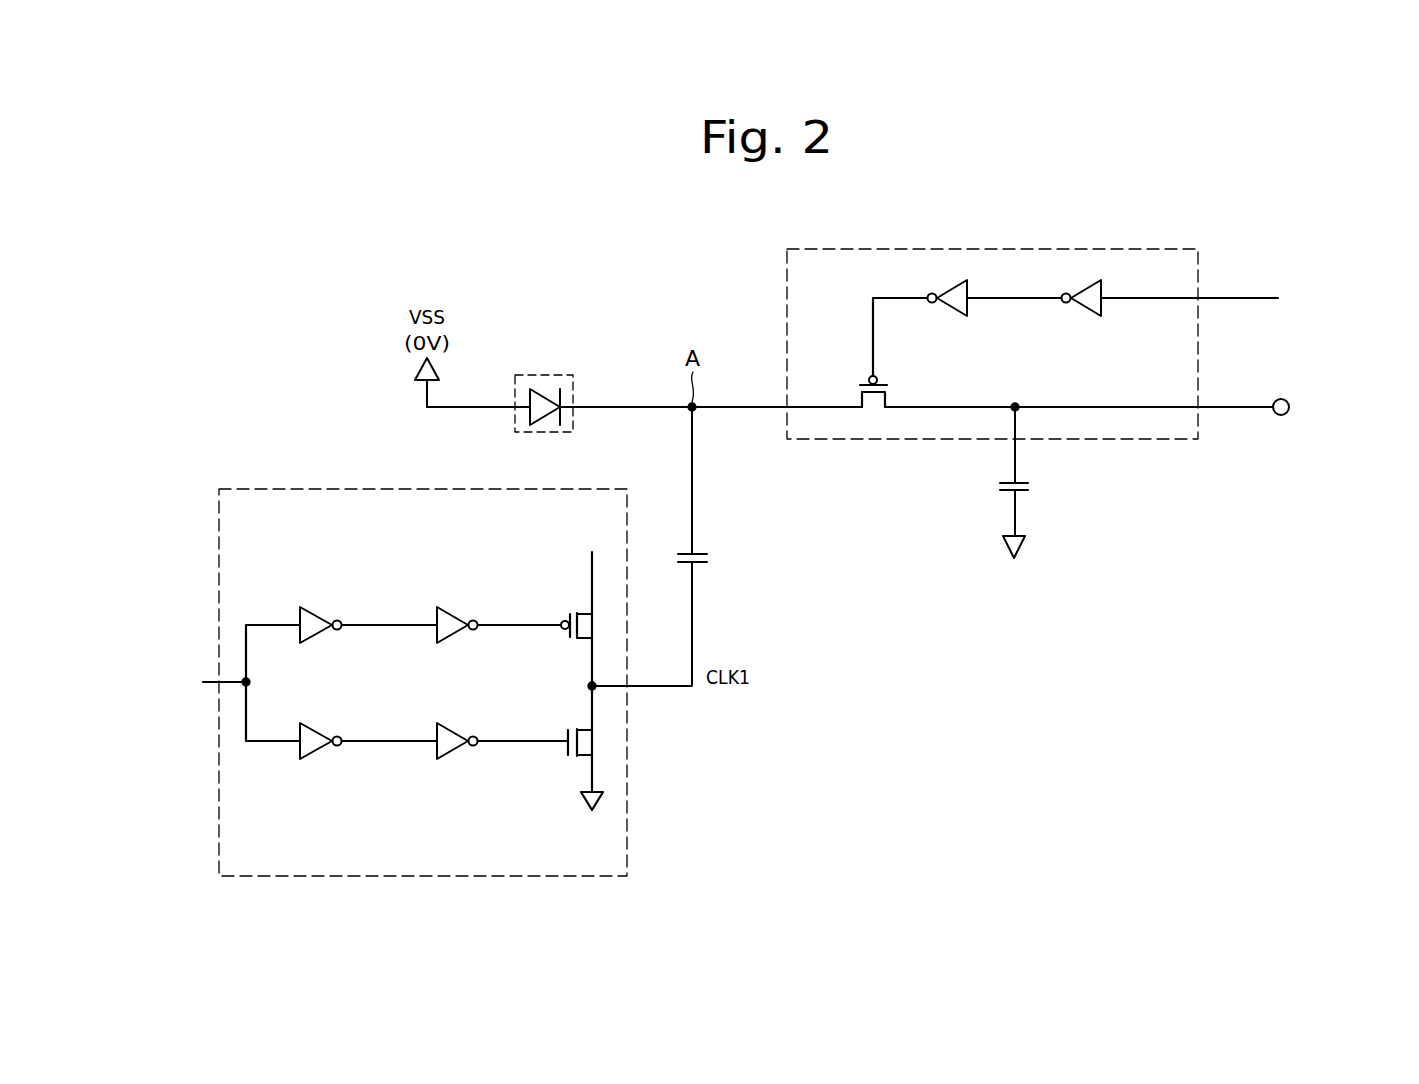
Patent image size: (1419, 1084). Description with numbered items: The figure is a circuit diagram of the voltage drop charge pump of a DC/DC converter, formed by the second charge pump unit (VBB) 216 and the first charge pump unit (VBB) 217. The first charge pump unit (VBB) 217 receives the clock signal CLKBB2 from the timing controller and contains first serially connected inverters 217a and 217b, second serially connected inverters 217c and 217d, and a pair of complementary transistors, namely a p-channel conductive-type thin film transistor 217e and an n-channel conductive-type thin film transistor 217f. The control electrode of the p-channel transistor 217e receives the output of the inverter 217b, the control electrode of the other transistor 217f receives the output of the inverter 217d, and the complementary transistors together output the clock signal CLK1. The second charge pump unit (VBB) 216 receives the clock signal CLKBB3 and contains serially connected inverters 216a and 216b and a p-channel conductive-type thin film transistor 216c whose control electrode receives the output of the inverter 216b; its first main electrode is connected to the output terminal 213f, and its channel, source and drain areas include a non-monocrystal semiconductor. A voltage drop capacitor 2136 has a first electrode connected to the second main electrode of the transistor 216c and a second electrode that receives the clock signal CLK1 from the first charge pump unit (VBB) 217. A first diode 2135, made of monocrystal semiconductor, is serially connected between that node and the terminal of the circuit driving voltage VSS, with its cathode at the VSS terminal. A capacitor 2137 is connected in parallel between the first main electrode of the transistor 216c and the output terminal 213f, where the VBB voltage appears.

The second charge pump unit (VBB) 216 is at (1158, 249).
The inverter 216a is at (1104, 307).
The inverter 216b is at (970, 307).
The p-channel conductive-type thin film transistor 216c is at (890, 399).
The first diode 2135 is at (548, 388).
The voltage drop capacitor 2136 is at (707, 553).
The capacitor 2137 is at (998, 481).
The output terminal 213f is at (1289, 407).
The first charge pump unit (VBB) 217 is at (373, 489).
The inverter 217a is at (316, 607).
The inverter 217b is at (452, 607).
The inverter 217c is at (314, 760).
The inverter 217d is at (451, 760).
The p-channel conductive-type thin film transistor 217e is at (578, 613).
The n-channel conductive-type thin film transistor 217f is at (578, 729).